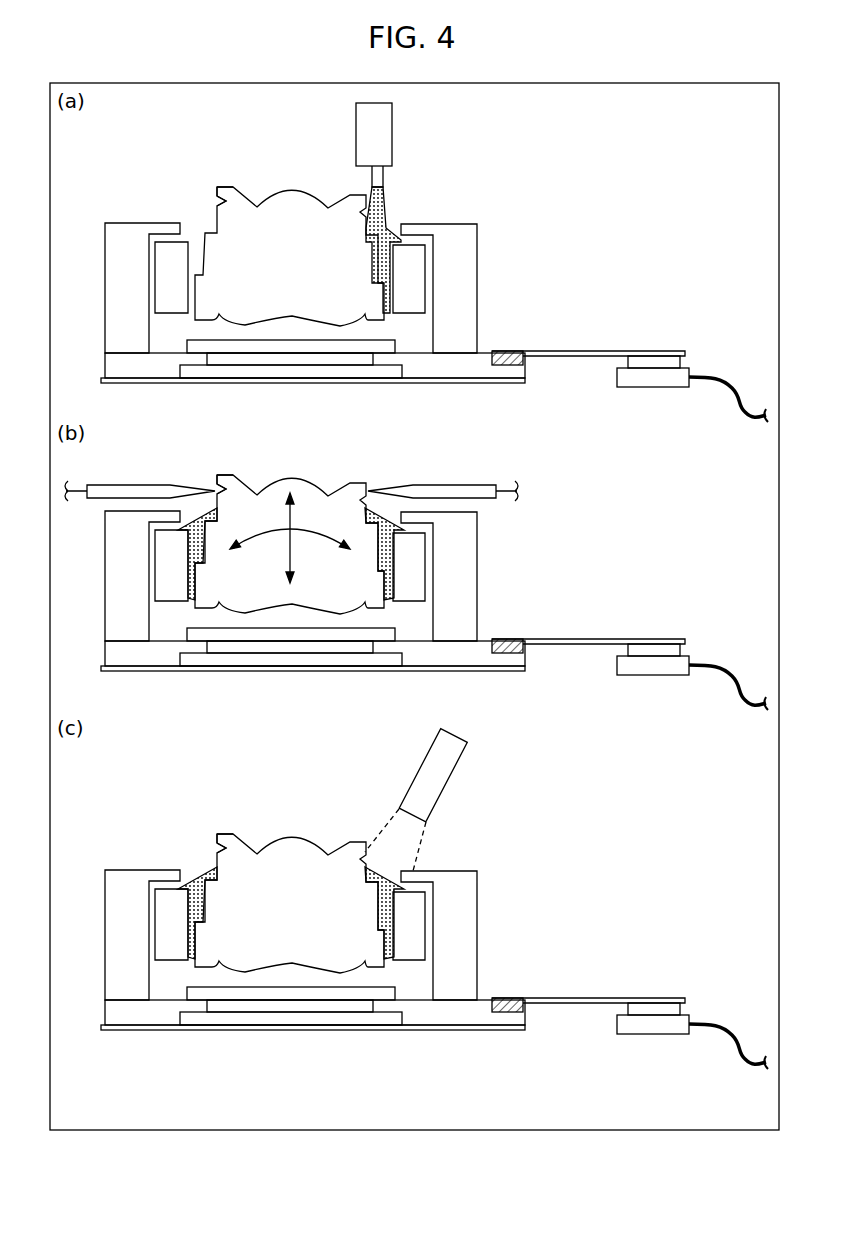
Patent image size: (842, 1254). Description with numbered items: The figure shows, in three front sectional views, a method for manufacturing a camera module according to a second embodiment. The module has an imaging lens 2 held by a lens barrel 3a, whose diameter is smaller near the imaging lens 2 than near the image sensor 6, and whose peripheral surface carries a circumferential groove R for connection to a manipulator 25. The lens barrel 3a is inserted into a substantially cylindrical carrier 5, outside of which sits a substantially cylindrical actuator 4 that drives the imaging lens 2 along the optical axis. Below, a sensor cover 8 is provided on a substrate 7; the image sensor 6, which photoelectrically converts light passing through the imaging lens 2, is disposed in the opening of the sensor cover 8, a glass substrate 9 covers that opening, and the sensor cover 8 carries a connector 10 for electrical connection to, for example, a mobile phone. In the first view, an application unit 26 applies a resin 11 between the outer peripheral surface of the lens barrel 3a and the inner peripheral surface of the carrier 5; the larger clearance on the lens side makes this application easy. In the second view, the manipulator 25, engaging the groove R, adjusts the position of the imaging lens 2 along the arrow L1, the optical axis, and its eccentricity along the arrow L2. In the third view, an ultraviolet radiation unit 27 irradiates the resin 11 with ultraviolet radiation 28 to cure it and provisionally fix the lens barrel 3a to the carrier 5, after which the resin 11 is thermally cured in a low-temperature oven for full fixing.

The imaging lens 2 is at (298, 197).
The lens barrel 3a is at (218, 190).
The groove (connection section) R is at (218, 200).
The actuator 4 is at (478, 264).
The carrier 5 is at (410, 290).
The image sensor 6 is at (262, 370).
The substrate 7 is at (472, 383).
The sensor cover 8 is at (436, 372).
The glass substrate 9 is at (316, 345).
The connector 10 is at (524, 366).
The resin 11 is at (385, 240).
The manipulator 25 is at (134, 490).
The application unit 26 is at (383, 132).
The ultraviolet radiation unit 27 is at (445, 770).
The ultraviolet radiation 28 is at (422, 843).
The arrow (optical axis direction) L1 is at (303, 539).
The arrow (eccentricity direction) L2 is at (293, 533).